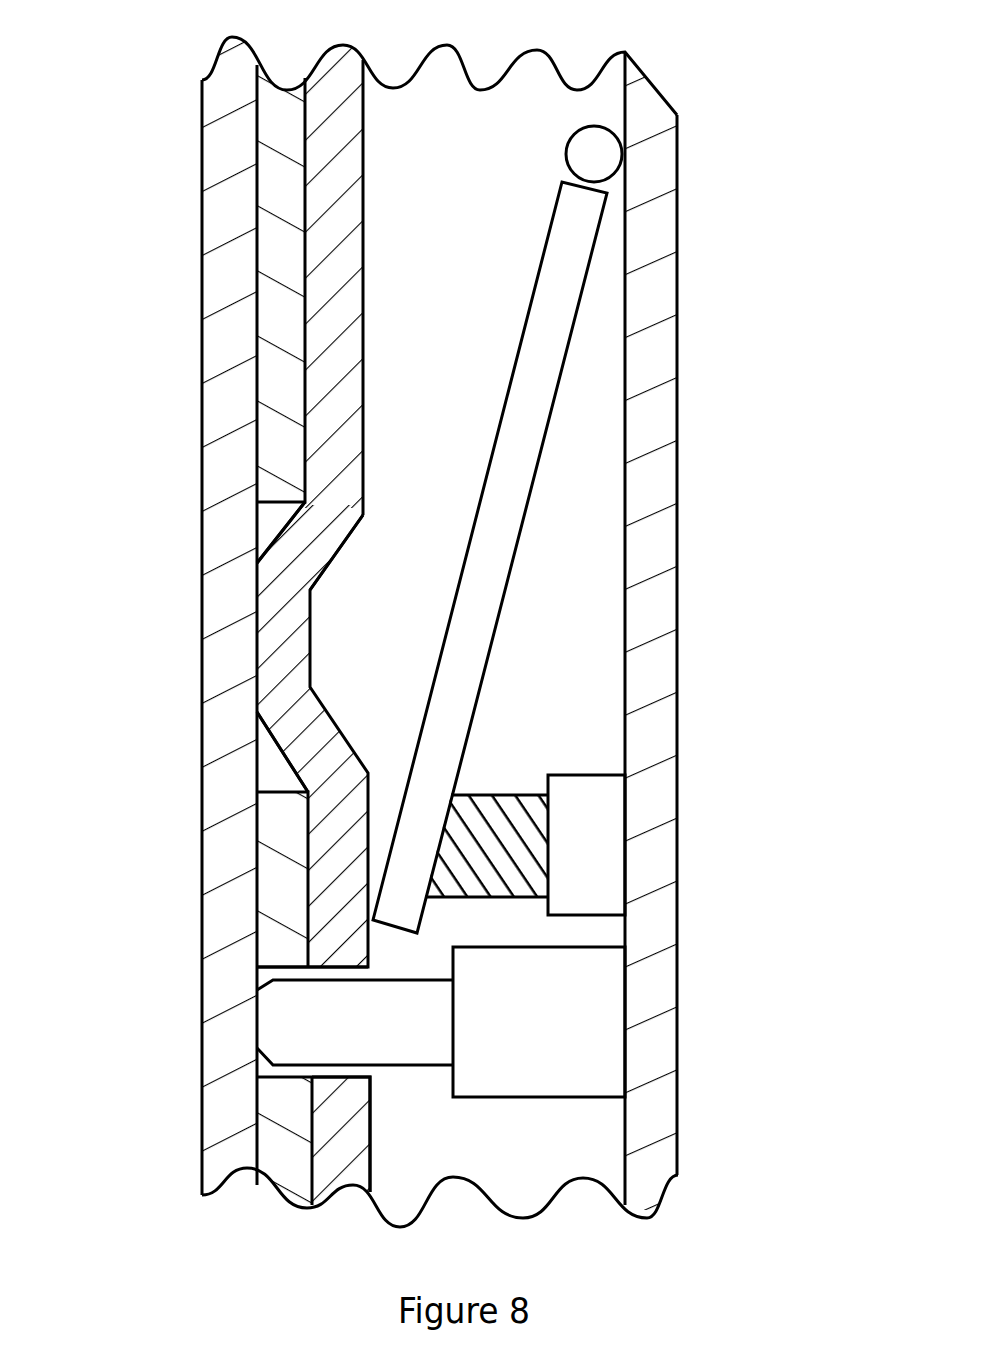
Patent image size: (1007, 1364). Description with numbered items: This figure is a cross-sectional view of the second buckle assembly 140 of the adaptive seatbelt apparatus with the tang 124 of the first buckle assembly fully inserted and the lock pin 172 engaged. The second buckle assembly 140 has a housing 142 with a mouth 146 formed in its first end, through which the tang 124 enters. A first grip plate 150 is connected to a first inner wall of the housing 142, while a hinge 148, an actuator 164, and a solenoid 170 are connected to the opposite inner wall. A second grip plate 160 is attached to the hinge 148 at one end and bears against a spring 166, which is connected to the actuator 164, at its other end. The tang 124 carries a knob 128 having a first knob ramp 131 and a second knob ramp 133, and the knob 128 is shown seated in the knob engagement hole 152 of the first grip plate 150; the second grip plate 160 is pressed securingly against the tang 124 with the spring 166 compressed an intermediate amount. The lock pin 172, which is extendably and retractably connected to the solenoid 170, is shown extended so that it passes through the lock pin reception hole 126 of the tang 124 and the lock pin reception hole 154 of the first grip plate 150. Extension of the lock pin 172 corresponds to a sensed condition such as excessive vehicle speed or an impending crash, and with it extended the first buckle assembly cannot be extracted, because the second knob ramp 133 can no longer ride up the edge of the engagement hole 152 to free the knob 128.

The tang 124 is at (333, 128).
The lock pin reception hole 126 is at (323, 1080).
The knob 128 is at (277, 642).
The first knob ramp 131 is at (280, 737).
The second knob ramp 133 is at (295, 528).
The second buckle assembly 140 is at (460, 641).
The housing 142 is at (200, 287).
The mouth 146 is at (448, 90).
The hinge 148 is at (620, 175).
The first grip plate 150 is at (278, 250).
The knob engagement hole 152 is at (270, 525).
The lock pin reception hole 154 is at (277, 963).
The second grip plate 160 is at (505, 612).
The actuator 164 is at (595, 847).
The spring 166 is at (500, 903).
The solenoid 170 is at (580, 1102).
The lock pin 172 is at (385, 1068).